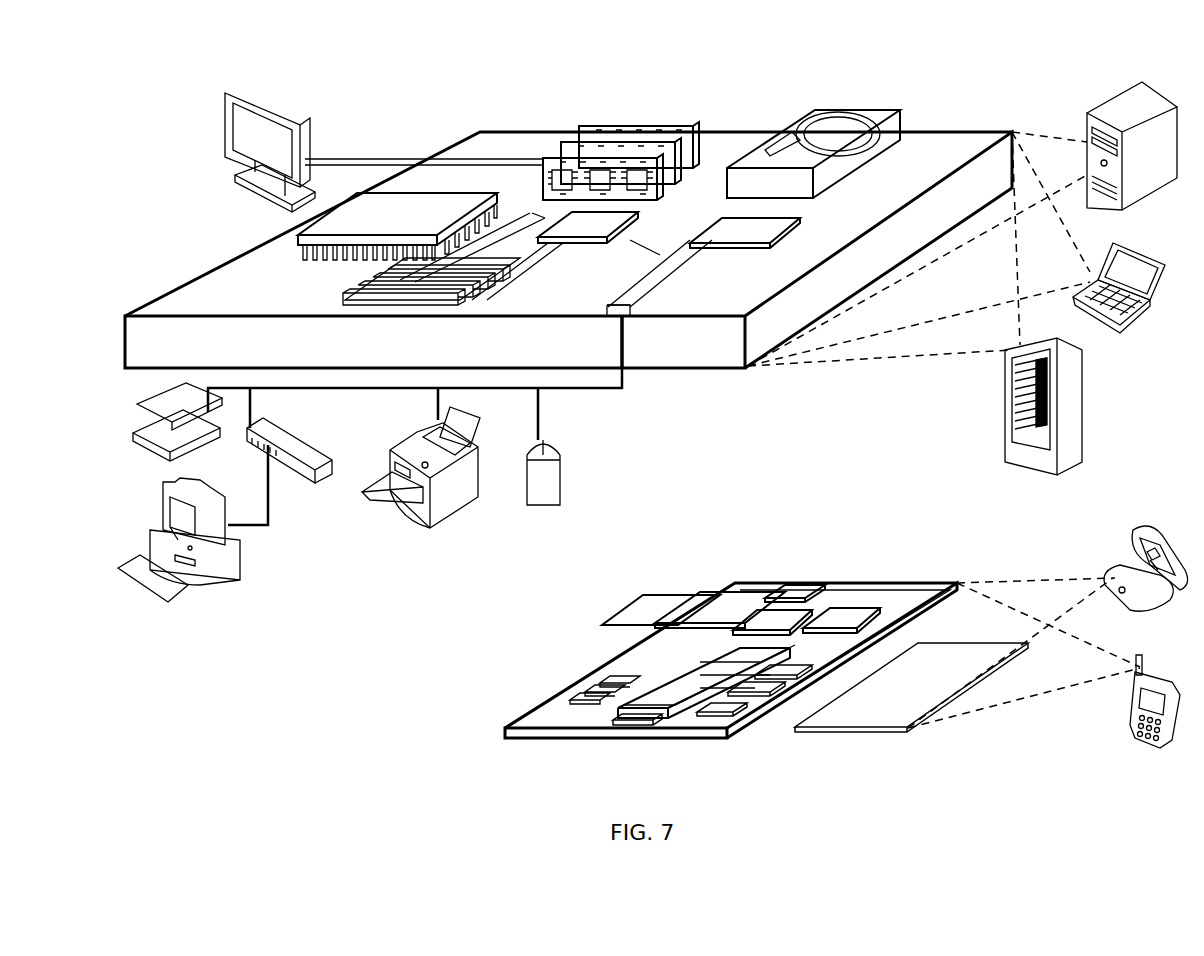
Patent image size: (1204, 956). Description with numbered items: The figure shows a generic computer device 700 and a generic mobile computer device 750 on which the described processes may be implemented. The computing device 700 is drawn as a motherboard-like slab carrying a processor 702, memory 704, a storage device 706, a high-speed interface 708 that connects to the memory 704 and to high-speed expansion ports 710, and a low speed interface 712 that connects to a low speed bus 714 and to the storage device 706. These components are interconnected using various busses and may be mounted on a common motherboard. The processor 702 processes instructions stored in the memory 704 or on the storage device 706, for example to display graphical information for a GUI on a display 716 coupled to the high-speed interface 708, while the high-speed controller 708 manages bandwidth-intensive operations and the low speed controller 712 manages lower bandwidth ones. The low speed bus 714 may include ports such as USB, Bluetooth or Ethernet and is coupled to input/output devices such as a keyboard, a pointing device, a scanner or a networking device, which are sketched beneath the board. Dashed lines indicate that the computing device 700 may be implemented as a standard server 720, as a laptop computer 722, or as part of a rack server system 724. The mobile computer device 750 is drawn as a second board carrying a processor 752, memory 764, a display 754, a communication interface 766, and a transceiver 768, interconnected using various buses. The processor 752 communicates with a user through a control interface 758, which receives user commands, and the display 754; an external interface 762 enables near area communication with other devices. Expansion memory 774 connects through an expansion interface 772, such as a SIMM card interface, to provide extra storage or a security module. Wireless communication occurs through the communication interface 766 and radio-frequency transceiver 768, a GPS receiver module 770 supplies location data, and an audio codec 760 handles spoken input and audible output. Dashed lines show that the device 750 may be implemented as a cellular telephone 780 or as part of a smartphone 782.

The computing device 700 is at (413, 108).
The processor 702 is at (300, 248).
The memory 704 is at (600, 128).
The storage device 706 is at (805, 118).
The high-speed interface 708 is at (568, 228).
The high-speed expansion ports 710 is at (355, 292).
The low speed interface 712 is at (743, 228).
The low speed bus 714 is at (640, 318).
The display 716 is at (222, 91).
The standard server 720 is at (1085, 120).
The laptop computer 722 is at (1108, 246).
The rack server system 724 is at (1000, 428).
The mobile computer device 750 is at (707, 566).
The processor 752 is at (662, 720).
The display 754 is at (907, 728).
The control interface 758 is at (770, 698).
The audio codec 760 is at (783, 680).
The external interface 762 is at (635, 726).
The memory 764 is at (585, 692).
The communication interface 766 is at (770, 618).
The transceiver 768 is at (843, 617).
The GPS receiver module 770 is at (815, 595).
The expansion interface 772 is at (700, 597).
The expansion memory 774 is at (641, 597).
The cellular telephone 780 is at (1157, 533).
The smartphone 782 is at (1140, 658).